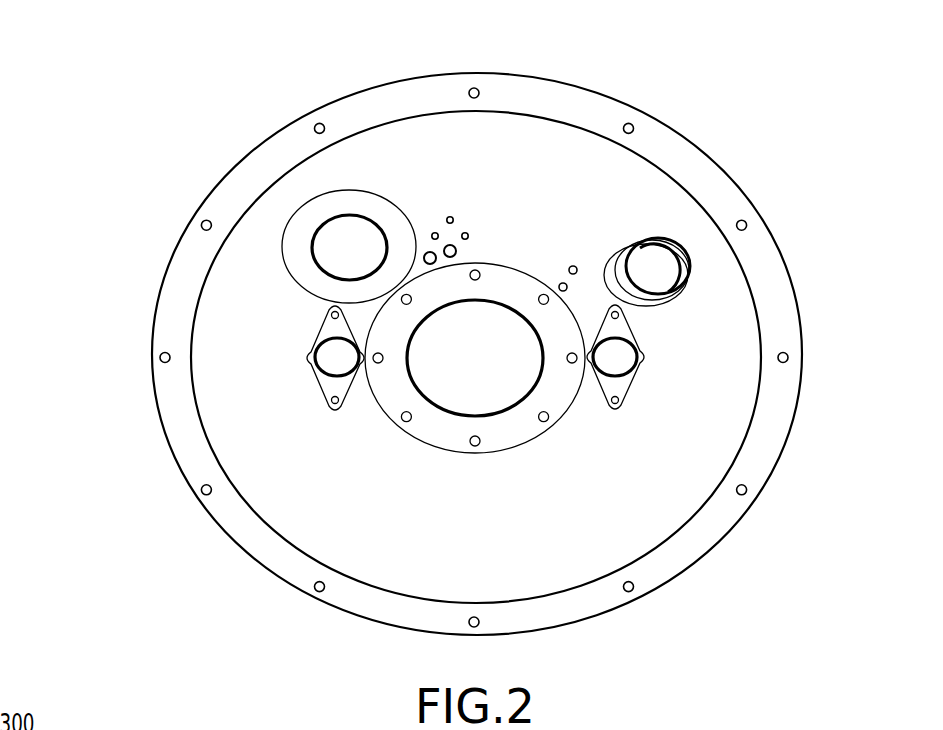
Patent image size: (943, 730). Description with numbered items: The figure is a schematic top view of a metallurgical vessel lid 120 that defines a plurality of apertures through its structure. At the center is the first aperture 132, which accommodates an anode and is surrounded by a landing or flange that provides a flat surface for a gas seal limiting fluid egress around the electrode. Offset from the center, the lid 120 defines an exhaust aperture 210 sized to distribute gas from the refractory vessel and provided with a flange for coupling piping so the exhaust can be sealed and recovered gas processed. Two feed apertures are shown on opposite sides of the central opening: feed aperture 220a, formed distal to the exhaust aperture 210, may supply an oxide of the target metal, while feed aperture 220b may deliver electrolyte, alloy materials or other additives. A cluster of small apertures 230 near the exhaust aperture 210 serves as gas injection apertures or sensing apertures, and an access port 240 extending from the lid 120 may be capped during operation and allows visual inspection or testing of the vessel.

The metallurgical vessel lid 120 is at (165, 80).
The first aperture 132 is at (392, 369).
The exhaust aperture 210 is at (340, 225).
The apertures 230 is at (462, 222).
The access ports 240 is at (678, 261).
The feed aperture 220a is at (630, 359).
The feed aperture 220b is at (312, 351).